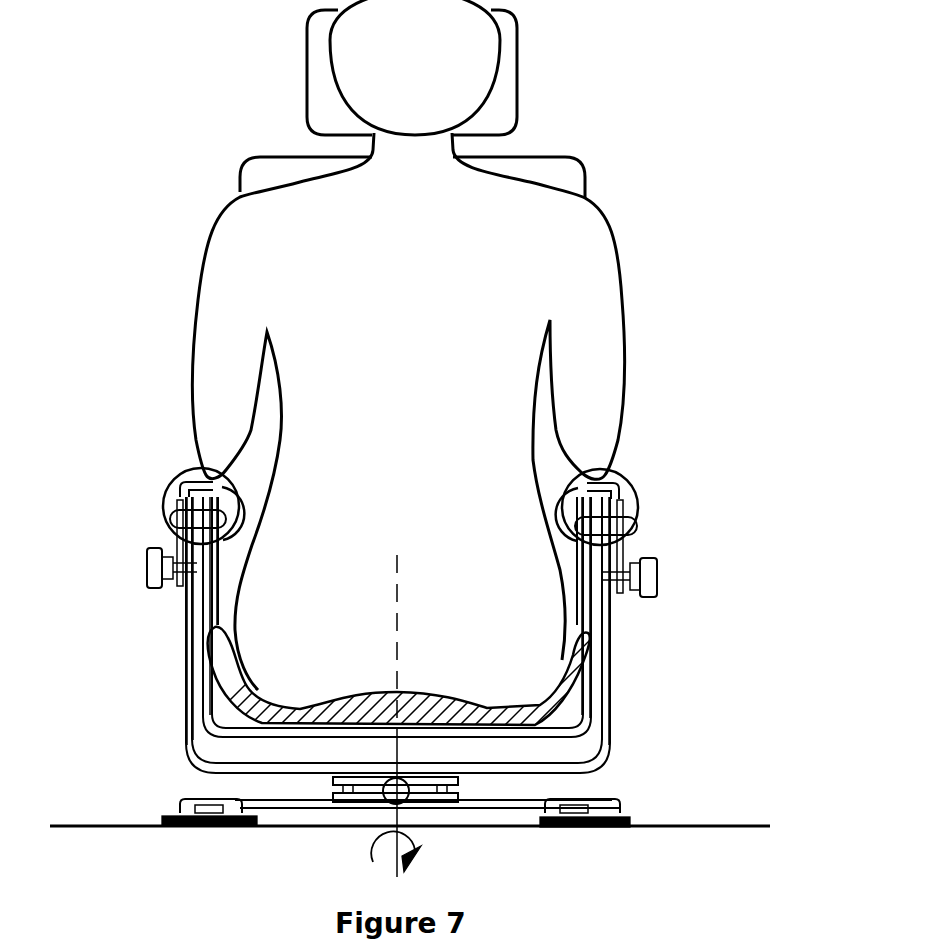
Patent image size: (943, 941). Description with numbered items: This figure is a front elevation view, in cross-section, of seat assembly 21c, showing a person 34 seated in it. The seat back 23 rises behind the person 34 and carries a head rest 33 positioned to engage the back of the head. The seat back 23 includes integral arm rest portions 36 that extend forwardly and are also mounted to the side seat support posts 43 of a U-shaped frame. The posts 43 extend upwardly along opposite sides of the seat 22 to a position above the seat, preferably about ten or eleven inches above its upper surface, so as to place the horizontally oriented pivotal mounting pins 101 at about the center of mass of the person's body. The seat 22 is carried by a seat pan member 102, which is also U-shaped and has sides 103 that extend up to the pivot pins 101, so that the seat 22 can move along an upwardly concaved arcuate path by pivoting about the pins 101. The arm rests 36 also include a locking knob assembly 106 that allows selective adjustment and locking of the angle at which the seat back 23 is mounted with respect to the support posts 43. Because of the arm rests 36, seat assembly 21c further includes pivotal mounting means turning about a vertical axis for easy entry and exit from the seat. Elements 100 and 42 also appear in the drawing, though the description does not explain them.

The head rest 33 is at (508, 62).
The seat back 23 is at (562, 175).
The person 34 is at (408, 411).
The arm rest portions 36 is at (180, 472).
The left armrest hook 100 is at (173, 486).
The pivotal mounting pins 101 is at (640, 520).
The locking knob assembly 106 is at (145, 562).
The sides of seat pan member 103 is at (399, 696).
The seat 22 is at (527, 708).
The seat assembly 21c is at (442, 696).
The side seat support posts 43 is at (612, 672).
The base plate 42 is at (575, 780).
The seat pan member 102 is at (467, 742).